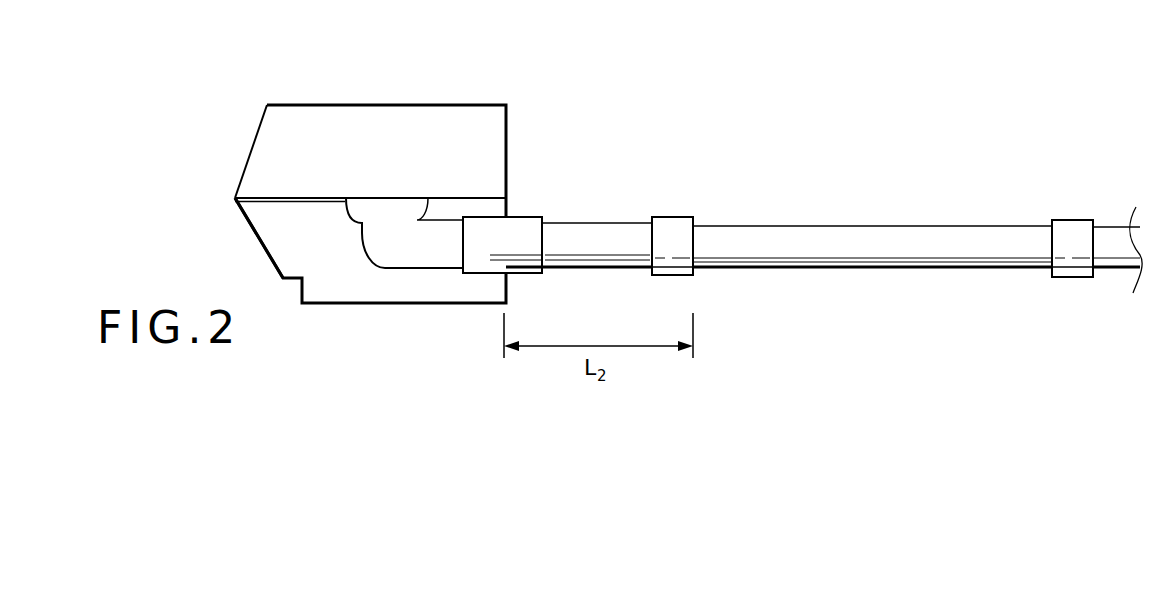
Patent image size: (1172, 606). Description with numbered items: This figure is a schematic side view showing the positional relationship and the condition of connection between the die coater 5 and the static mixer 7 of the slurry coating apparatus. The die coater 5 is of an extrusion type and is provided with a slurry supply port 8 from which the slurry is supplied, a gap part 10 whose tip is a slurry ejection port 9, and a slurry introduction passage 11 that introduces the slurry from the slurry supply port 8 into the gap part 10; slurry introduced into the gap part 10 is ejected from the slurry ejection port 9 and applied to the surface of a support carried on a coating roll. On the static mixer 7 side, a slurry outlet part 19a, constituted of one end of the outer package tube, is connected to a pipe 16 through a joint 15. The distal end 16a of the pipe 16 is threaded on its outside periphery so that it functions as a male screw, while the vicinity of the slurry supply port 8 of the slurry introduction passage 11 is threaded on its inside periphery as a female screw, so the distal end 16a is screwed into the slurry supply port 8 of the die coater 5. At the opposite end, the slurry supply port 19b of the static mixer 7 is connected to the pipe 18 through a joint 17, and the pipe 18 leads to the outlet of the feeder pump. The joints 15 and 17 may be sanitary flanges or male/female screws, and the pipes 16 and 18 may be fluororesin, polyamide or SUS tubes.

The die coater 5 is at (442, 74).
The static mixer 7 is at (865, 195).
The slurry supply port 8 is at (512, 213).
The slurry ejection port 9 is at (236, 199).
The gap part 10 is at (288, 203).
The slurry introduction passage 11 is at (367, 260).
The joint 15 is at (675, 225).
The pipe 16 is at (613, 232).
The distal end 16a is at (532, 228).
The joint 17 is at (1069, 228).
The pipe 18 is at (1115, 228).
The slurry outlet part 19a is at (698, 272).
The slurry supply port 19b is at (1047, 272).